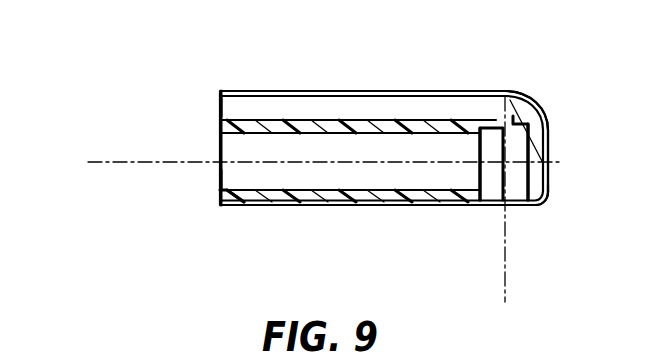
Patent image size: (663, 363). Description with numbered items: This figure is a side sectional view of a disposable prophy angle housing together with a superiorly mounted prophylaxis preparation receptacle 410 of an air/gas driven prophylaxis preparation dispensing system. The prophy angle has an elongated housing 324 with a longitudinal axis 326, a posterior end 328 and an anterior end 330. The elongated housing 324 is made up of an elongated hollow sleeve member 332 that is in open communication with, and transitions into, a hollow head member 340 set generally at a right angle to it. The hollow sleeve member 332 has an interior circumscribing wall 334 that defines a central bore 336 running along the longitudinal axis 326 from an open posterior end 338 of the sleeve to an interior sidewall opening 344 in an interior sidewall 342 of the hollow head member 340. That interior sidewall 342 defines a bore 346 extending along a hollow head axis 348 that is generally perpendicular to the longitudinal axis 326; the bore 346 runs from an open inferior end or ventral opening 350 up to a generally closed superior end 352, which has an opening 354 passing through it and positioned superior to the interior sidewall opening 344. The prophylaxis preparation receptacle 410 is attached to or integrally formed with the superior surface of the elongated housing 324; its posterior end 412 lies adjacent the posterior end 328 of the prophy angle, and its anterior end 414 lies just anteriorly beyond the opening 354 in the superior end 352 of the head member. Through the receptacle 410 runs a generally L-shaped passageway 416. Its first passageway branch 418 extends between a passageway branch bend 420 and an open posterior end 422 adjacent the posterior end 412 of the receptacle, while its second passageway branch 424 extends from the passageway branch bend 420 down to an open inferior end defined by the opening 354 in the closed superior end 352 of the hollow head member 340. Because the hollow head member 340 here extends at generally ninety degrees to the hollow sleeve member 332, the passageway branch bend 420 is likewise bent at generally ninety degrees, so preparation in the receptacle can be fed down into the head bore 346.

The superiorly mounted elongated prophylaxis preparation receptacle 410 is at (251, 80).
The posterior end 412 is at (218, 90).
The anterior end 414 is at (542, 101).
The L-shaped passageway 416 is at (382, 105).
The first passageway branch 418 is at (304, 108).
The passageway branch bend 420 is at (502, 107).
The open posterior end 422 is at (216, 107).
The second passageway branch 424 is at (508, 124).
The elongated housing 324 is at (205, 120).
The longitudinal axis 326 is at (95, 162).
The posterior end 328 is at (219, 205).
The anterior end 330 is at (548, 194).
The elongated hollow sleeve member 332 is at (252, 209).
The interior circumscribing wall 334 is at (317, 136).
The central bore 336 is at (367, 178).
The open posterior end 338 is at (216, 177).
The hollow head member 340 is at (552, 170).
The interior sidewall 342 is at (522, 208).
The interior sidewall opening 344 is at (477, 153).
The bore 346 is at (527, 152).
The hollow head axis 348 is at (504, 277).
The ventral opening 350 is at (516, 212).
The generally closed superior end 352 is at (492, 120).
The opening 354 is at (497, 142).